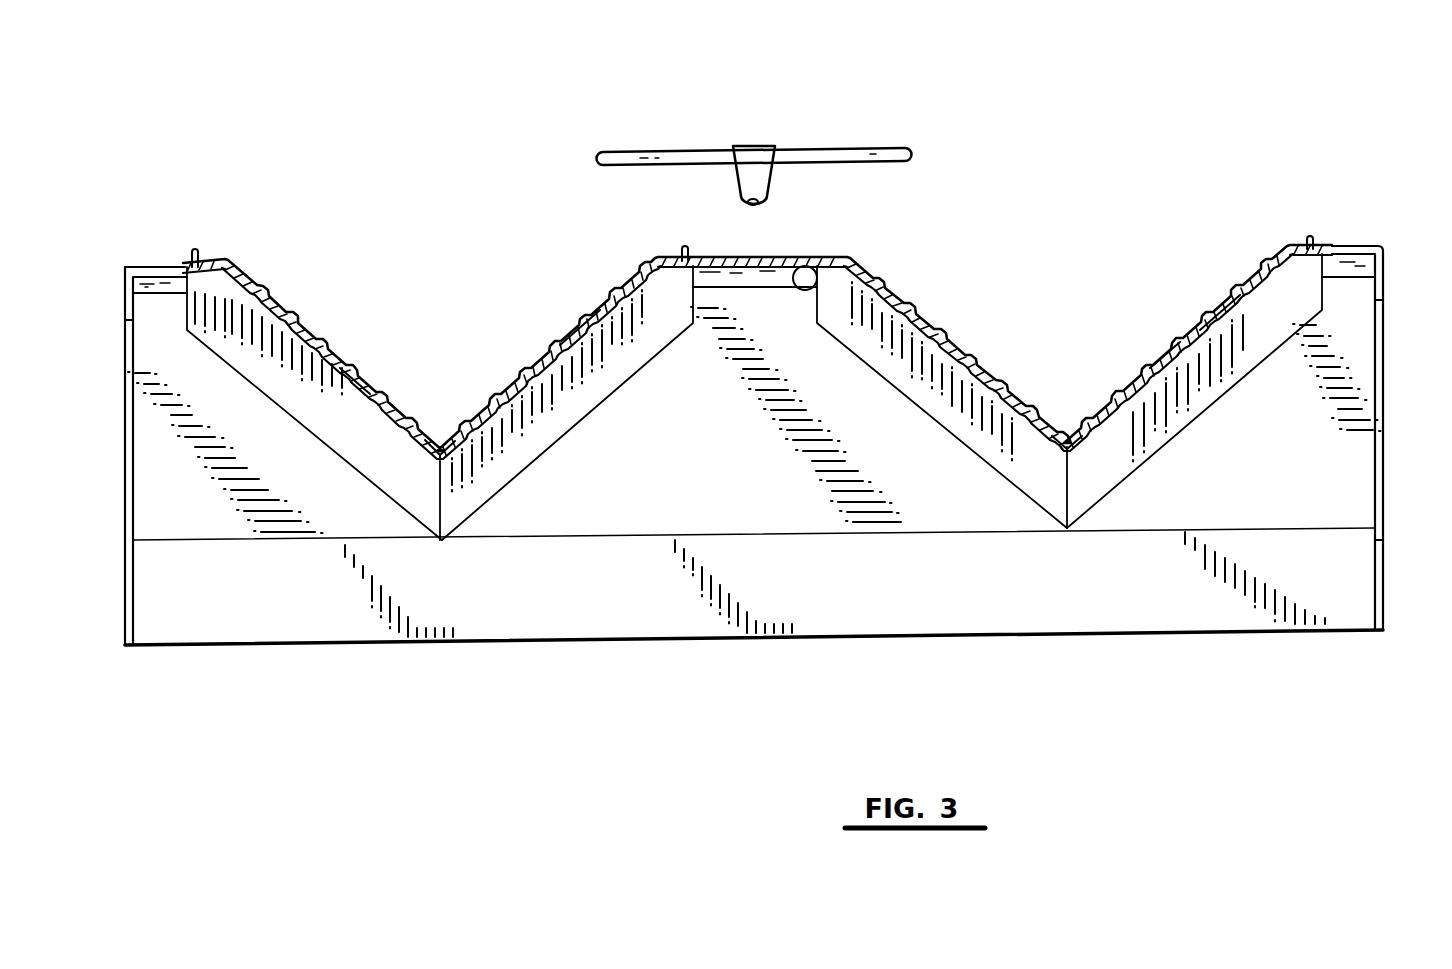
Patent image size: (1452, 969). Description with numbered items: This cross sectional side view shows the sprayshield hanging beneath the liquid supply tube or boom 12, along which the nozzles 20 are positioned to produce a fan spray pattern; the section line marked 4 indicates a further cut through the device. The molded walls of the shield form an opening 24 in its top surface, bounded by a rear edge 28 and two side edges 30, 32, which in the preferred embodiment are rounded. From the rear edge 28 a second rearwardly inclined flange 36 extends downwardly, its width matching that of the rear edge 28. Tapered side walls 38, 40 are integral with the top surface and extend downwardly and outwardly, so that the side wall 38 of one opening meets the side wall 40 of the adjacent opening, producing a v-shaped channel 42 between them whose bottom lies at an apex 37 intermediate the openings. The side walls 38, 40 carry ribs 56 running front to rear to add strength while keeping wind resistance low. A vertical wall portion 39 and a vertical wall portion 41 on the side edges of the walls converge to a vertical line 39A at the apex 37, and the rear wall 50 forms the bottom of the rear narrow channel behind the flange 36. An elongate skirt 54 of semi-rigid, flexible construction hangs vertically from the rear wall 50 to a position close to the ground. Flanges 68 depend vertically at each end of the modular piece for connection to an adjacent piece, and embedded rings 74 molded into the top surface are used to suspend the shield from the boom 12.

The section line 4- 4 is at (777, 106).
The liquid supply tube or boom 12 is at (840, 138).
The nozzles 20 is at (748, 158).
The opening 24 is at (755, 255).
The rear edge 28 is at (782, 255).
The side edge 30 is at (708, 262).
The side edge 32 is at (817, 288).
The second rearwardly inclined flange 36 is at (768, 275).
The apex 37 is at (442, 445).
The side wall 38 is at (585, 315).
The vertical wall portion 39 is at (333, 407).
The vertical line 39A is at (437, 513).
The side wall 40 is at (292, 319).
The vertical wall portion 41 is at (555, 420).
The v-shaped channel 42 is at (442, 330).
The rear wall 50 is at (748, 503).
The elongate skirt 54 is at (917, 602).
The ribs 56 is at (360, 376).
The flanges 68 is at (140, 575).
The embedded rings 74 is at (195, 252).